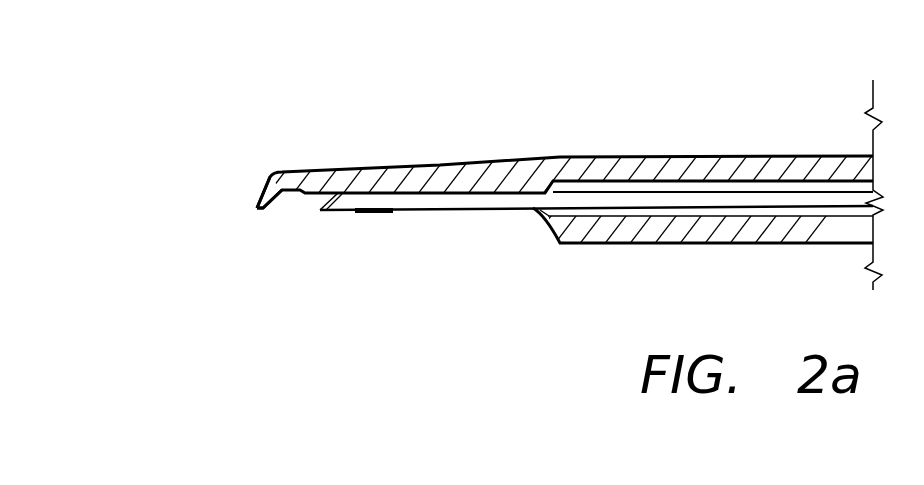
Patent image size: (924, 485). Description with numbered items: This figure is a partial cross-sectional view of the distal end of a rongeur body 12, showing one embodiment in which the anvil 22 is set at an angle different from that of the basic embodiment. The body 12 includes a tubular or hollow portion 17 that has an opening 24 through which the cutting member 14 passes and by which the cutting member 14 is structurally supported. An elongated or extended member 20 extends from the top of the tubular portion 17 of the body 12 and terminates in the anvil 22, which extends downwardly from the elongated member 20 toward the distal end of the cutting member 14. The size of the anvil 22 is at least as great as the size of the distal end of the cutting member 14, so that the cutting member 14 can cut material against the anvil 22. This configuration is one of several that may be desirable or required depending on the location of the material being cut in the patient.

The body 12 is at (683, 158).
The cutting member 14 is at (440, 201).
The tubular portion 17 is at (765, 118).
The elongated member 20 is at (415, 170).
The anvil 22 is at (267, 195).
The opening 24 is at (588, 231).